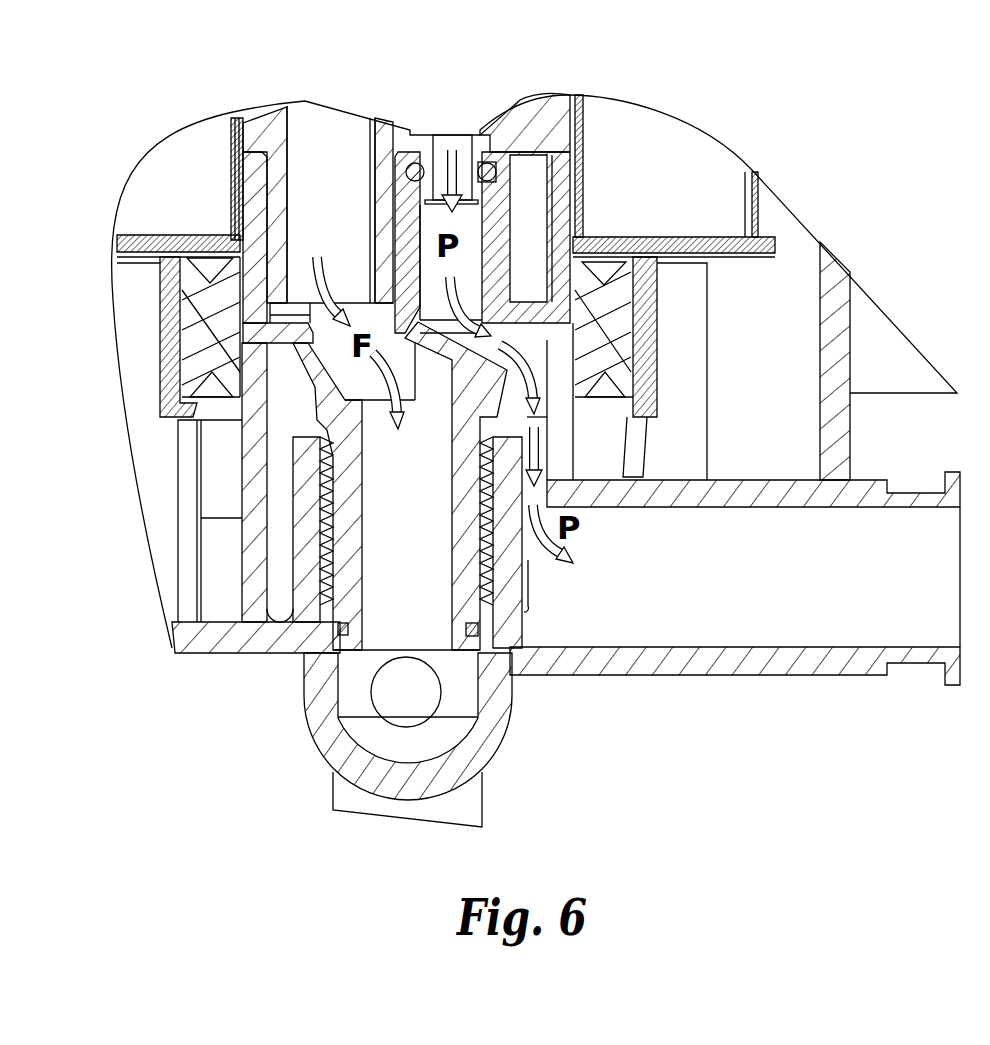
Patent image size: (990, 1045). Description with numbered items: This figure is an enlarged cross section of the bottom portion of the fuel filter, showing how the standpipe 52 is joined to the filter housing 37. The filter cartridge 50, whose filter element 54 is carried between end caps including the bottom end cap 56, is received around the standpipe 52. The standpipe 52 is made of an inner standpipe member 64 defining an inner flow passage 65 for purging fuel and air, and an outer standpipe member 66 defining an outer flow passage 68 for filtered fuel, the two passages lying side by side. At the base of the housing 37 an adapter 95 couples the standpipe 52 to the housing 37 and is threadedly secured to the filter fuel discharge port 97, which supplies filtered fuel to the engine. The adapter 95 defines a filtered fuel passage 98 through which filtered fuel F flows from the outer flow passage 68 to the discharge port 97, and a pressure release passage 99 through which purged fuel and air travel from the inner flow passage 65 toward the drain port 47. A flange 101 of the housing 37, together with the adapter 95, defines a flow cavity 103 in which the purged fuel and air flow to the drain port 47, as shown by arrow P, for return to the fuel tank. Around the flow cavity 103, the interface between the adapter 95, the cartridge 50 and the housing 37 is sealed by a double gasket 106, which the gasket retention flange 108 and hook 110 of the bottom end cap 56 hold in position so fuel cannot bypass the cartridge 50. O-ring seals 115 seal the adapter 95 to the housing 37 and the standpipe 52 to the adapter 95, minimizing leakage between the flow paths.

The filter housing 37 is at (837, 300).
The drain port 47 is at (922, 665).
The filter cartridge 50 is at (633, 147).
The standpipe 52 is at (260, 128).
The filter element 54 is at (695, 162).
The bottom end cap 56 is at (738, 237).
The inner standpipe member 64 is at (481, 145).
The inner flow passage 65 is at (450, 126).
The outer standpipe member 66 is at (273, 120).
The outer flow passage 68 is at (329, 140).
The adapter 95 is at (313, 362).
The filter fuel discharge port 97 is at (360, 668).
The filtered fuel passage 98 is at (387, 556).
The pressure release passage 99 is at (486, 240).
The flange 101 is at (563, 470).
The flow cavity 103 is at (527, 417).
The double gasket 106 is at (617, 330).
The gasket retention flange 108 is at (160, 307).
The hook 110 is at (167, 423).
The o-ring seals 115 is at (490, 160).